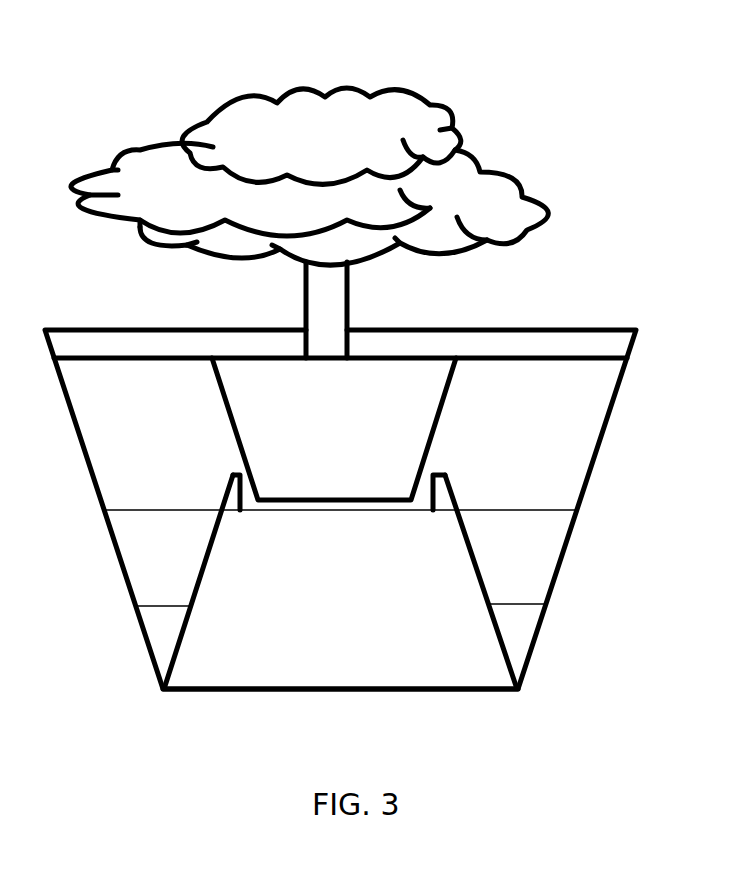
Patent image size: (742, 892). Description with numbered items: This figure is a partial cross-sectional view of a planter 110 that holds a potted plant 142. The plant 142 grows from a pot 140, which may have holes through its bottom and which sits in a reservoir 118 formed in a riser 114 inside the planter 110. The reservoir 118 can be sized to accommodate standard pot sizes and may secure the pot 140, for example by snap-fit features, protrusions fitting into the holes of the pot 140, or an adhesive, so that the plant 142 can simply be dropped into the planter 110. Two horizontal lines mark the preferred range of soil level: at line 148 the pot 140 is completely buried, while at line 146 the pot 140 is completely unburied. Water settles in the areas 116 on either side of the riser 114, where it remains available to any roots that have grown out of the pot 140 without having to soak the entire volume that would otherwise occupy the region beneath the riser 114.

The planter 110 is at (596, 323).
The riser 114 is at (452, 642).
The areas 116 is at (167, 626).
The reservoir 118 is at (250, 495).
The pot 140 is at (348, 425).
The plant 142 is at (508, 202).
The line 146 is at (492, 510).
The line 148 is at (555, 360).